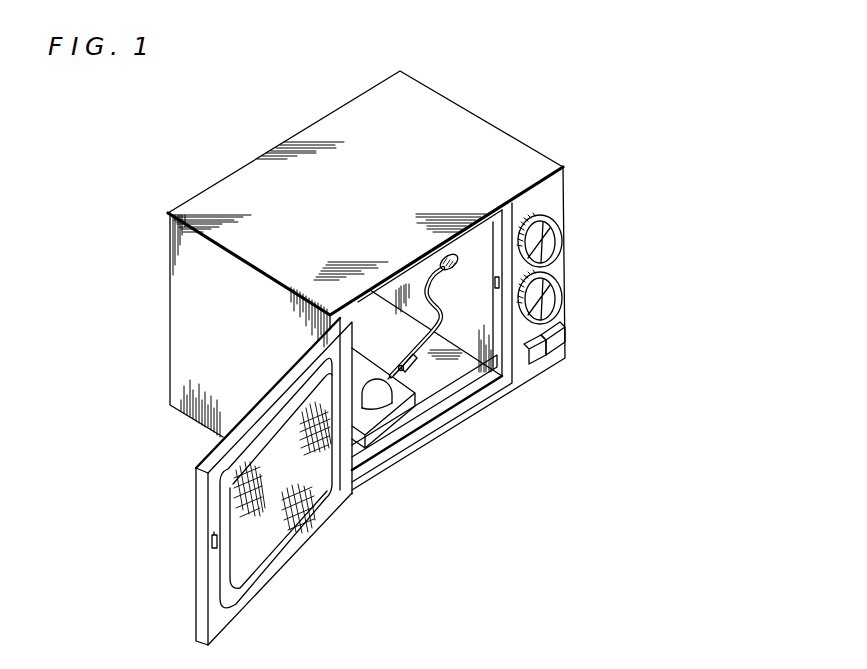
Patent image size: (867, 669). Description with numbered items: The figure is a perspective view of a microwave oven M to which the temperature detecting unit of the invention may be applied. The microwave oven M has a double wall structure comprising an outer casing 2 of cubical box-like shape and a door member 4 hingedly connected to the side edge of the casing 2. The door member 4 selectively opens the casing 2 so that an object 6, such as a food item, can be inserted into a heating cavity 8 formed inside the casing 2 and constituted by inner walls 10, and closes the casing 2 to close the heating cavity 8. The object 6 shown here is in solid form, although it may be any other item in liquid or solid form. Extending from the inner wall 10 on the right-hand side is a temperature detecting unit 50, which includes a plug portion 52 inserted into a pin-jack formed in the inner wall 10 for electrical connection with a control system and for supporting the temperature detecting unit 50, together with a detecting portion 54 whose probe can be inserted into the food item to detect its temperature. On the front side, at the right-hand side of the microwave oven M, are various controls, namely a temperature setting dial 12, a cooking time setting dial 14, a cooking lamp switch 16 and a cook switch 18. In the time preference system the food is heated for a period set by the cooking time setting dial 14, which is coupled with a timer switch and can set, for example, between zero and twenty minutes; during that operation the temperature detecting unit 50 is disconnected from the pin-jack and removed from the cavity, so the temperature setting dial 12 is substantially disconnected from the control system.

The microwave oven M is at (541, 129).
The outer casing 2 is at (220, 350).
The door member 4 is at (288, 542).
The object 6 is at (368, 402).
The heating cavity 8 is at (472, 373).
The inner walls 10 is at (470, 330).
The temperature setting dial 12 is at (547, 232).
The cooking time setting dial 14 is at (550, 299).
The cooking lamp switch 16 is at (553, 340).
The cook switch 18 is at (547, 353).
The temperature detecting unit 50 is at (422, 334).
The plug portion 52 is at (453, 269).
The detecting portion 54 is at (403, 366).